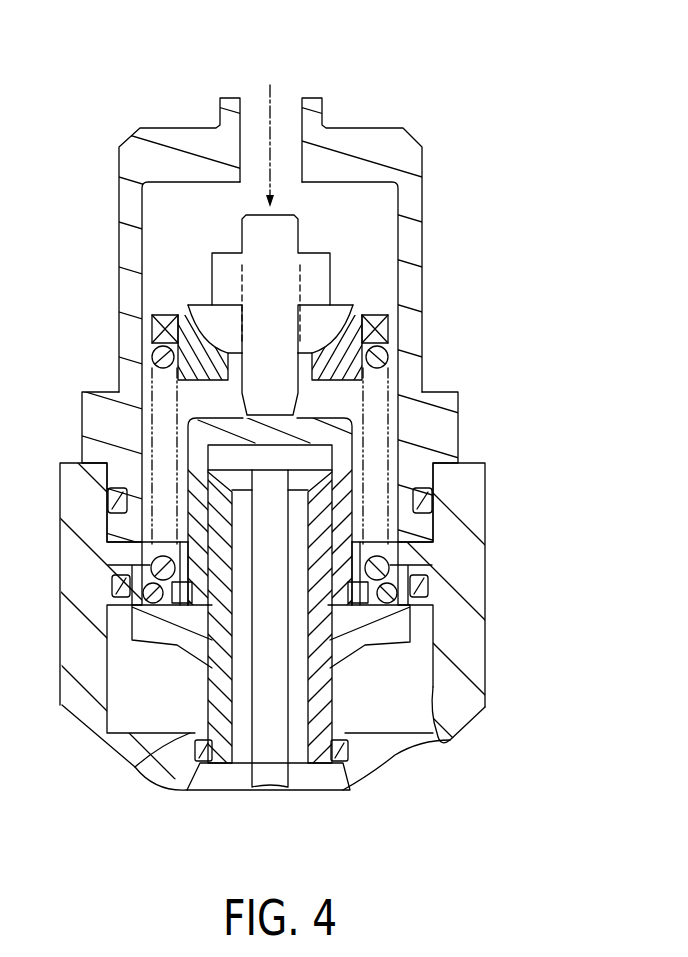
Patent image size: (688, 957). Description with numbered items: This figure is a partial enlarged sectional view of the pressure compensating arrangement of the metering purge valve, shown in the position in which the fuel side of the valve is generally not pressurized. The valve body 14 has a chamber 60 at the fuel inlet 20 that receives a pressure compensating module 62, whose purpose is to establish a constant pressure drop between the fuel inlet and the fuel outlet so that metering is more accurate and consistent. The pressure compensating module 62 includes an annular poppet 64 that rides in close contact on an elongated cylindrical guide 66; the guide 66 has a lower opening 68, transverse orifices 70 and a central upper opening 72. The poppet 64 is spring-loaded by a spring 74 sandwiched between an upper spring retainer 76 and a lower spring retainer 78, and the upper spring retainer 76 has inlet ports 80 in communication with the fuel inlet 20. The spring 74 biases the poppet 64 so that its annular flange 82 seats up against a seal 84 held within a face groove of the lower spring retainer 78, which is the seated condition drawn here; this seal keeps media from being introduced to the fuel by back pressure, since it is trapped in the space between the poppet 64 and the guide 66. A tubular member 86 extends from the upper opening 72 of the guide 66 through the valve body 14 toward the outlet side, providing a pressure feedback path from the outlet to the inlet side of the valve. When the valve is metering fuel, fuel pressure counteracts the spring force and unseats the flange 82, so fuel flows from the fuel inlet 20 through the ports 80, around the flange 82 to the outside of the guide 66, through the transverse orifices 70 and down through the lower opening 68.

The valve body 14 is at (447, 492).
The fuel inlet 20 is at (298, 100).
The chamber 60 is at (435, 692).
The pressure compensating module 62 is at (432, 243).
The annular poppet 64 is at (345, 420).
The elongated cylindrical guide 66 is at (143, 767).
The lower opening 68 is at (313, 775).
The transverse orifices 70 is at (330, 690).
The central upper opening 72 is at (258, 470).
The spring 74 is at (158, 362).
The upper spring retainer 76 is at (155, 313).
The lower spring retainer 78 is at (418, 552).
The inlet ports 80 is at (362, 316).
The annular flange 82 is at (152, 650).
The seal 84 is at (410, 620).
The tubular member 86 is at (247, 775).